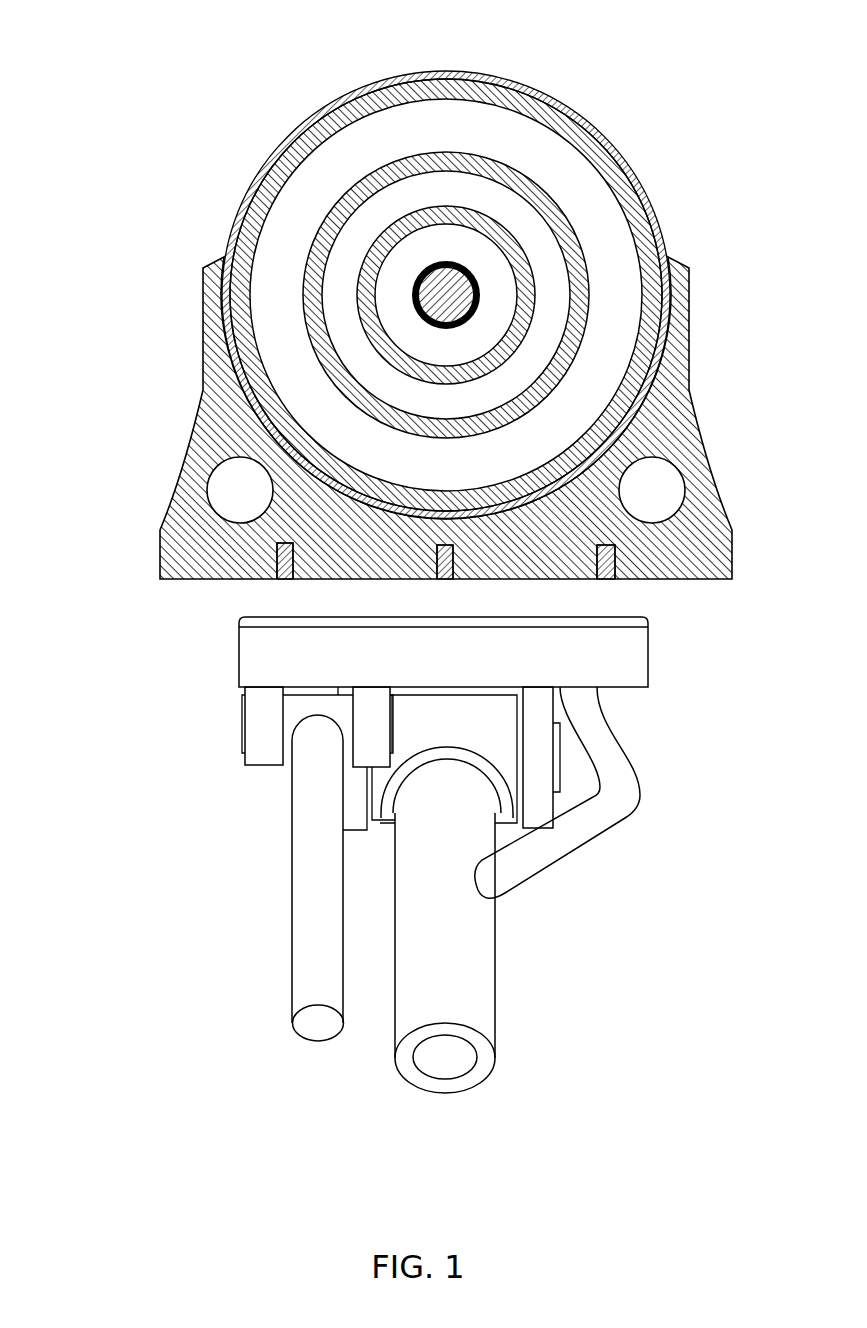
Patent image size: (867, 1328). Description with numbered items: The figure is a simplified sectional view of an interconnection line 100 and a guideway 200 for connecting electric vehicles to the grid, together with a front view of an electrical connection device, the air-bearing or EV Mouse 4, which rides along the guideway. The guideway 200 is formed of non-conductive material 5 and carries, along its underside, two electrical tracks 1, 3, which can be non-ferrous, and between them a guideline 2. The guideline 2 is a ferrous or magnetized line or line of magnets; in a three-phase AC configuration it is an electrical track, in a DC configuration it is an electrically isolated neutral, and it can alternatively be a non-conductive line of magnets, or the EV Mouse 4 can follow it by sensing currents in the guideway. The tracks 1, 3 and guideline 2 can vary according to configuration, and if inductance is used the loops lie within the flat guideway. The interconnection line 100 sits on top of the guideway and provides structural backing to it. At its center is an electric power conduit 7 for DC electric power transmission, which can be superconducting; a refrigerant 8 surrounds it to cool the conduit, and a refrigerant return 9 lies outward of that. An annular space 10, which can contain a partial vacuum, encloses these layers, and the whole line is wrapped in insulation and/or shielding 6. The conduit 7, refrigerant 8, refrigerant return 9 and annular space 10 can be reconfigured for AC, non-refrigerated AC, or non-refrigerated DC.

The interconnection line 100 is at (108, 78).
The guideway 200 is at (108, 463).
The EV Mouse 4 is at (108, 615).
The electrical track 1 is at (285, 580).
The guideline 2 is at (445, 580).
The electrical track 3 is at (603, 580).
The non-conductive material 5 is at (497, 557).
The insulation and/or shielding 6 is at (622, 175).
The electric power conduit 7 is at (497, 307).
The refrigerant 8 is at (447, 293).
The refrigerant return 9 is at (455, 188).
The annular space 10 is at (390, 140).